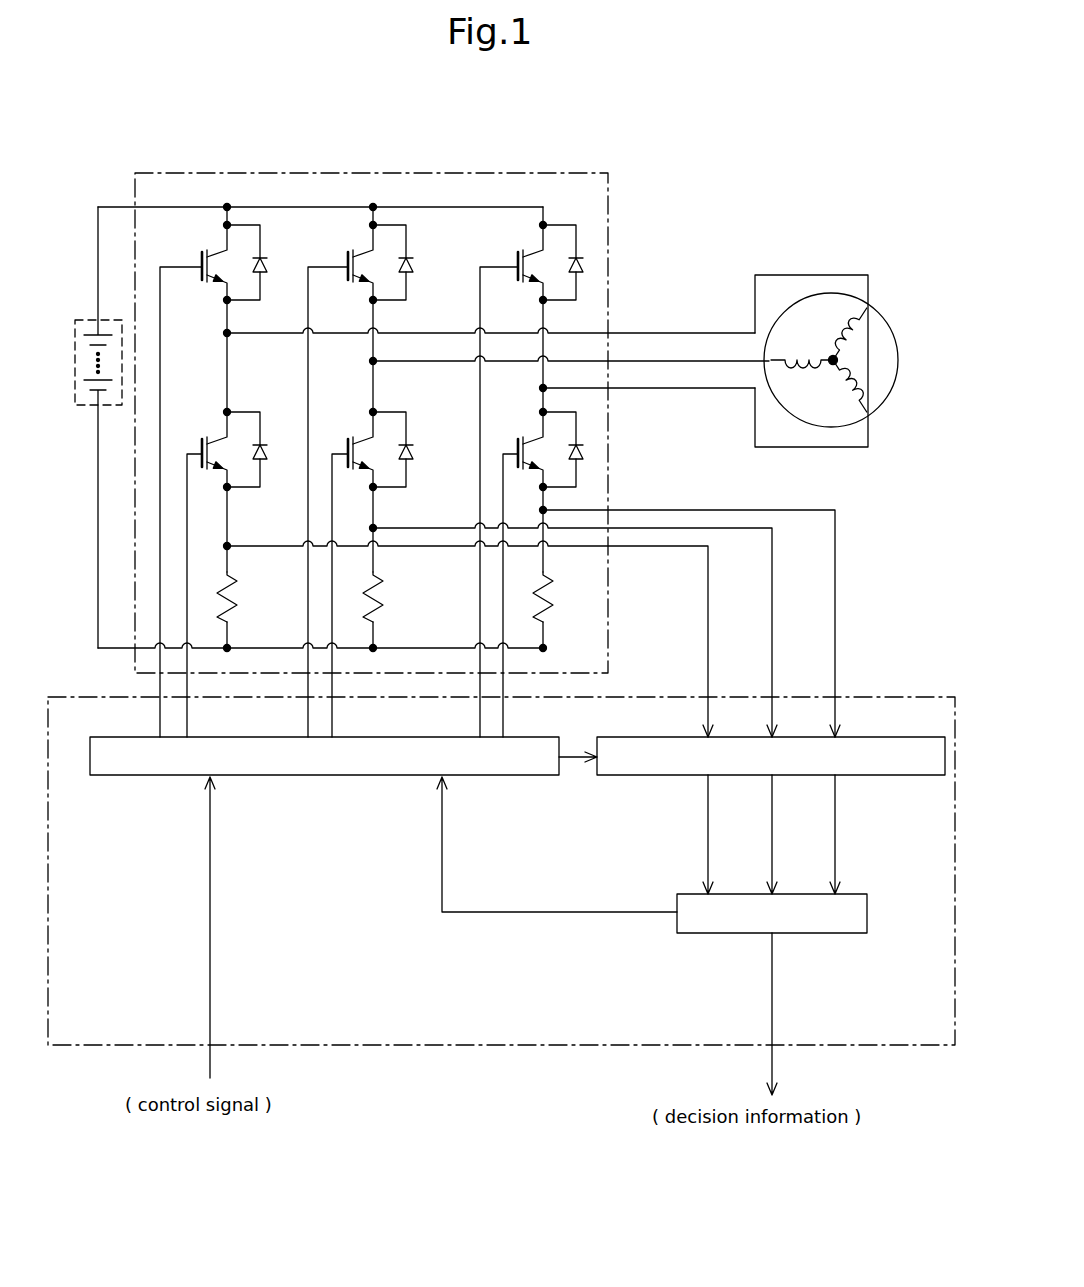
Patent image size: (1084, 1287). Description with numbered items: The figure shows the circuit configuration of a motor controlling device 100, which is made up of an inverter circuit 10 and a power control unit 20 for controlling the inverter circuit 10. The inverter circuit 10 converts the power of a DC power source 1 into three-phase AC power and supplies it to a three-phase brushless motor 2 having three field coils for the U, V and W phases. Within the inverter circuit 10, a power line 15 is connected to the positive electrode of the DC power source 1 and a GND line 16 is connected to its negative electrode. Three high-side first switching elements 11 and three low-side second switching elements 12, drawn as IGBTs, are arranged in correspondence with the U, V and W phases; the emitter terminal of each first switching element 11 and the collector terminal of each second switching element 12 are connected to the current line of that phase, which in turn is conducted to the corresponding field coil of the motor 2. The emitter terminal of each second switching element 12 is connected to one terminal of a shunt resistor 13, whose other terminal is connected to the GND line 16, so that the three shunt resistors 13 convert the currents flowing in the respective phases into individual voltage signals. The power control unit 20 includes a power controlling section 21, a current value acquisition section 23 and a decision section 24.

The motor controlling device 100 is at (722, 131).
The inverter circuit 10 is at (513, 172).
The power line 15 is at (116, 206).
The GND line 16 is at (98, 650).
The DC power source 1 is at (74, 345).
The first switching element 11 is at (201, 251).
The second switching element 12 is at (200, 441).
The shunt resistor 13 is at (240, 607).
The three-phase brushless motor 2 is at (898, 360).
The power control unit 20 is at (78, 1047).
The power controlling section 21 is at (130, 777).
The current value acquisition section 23 is at (903, 737).
The decision section 24 is at (868, 912).